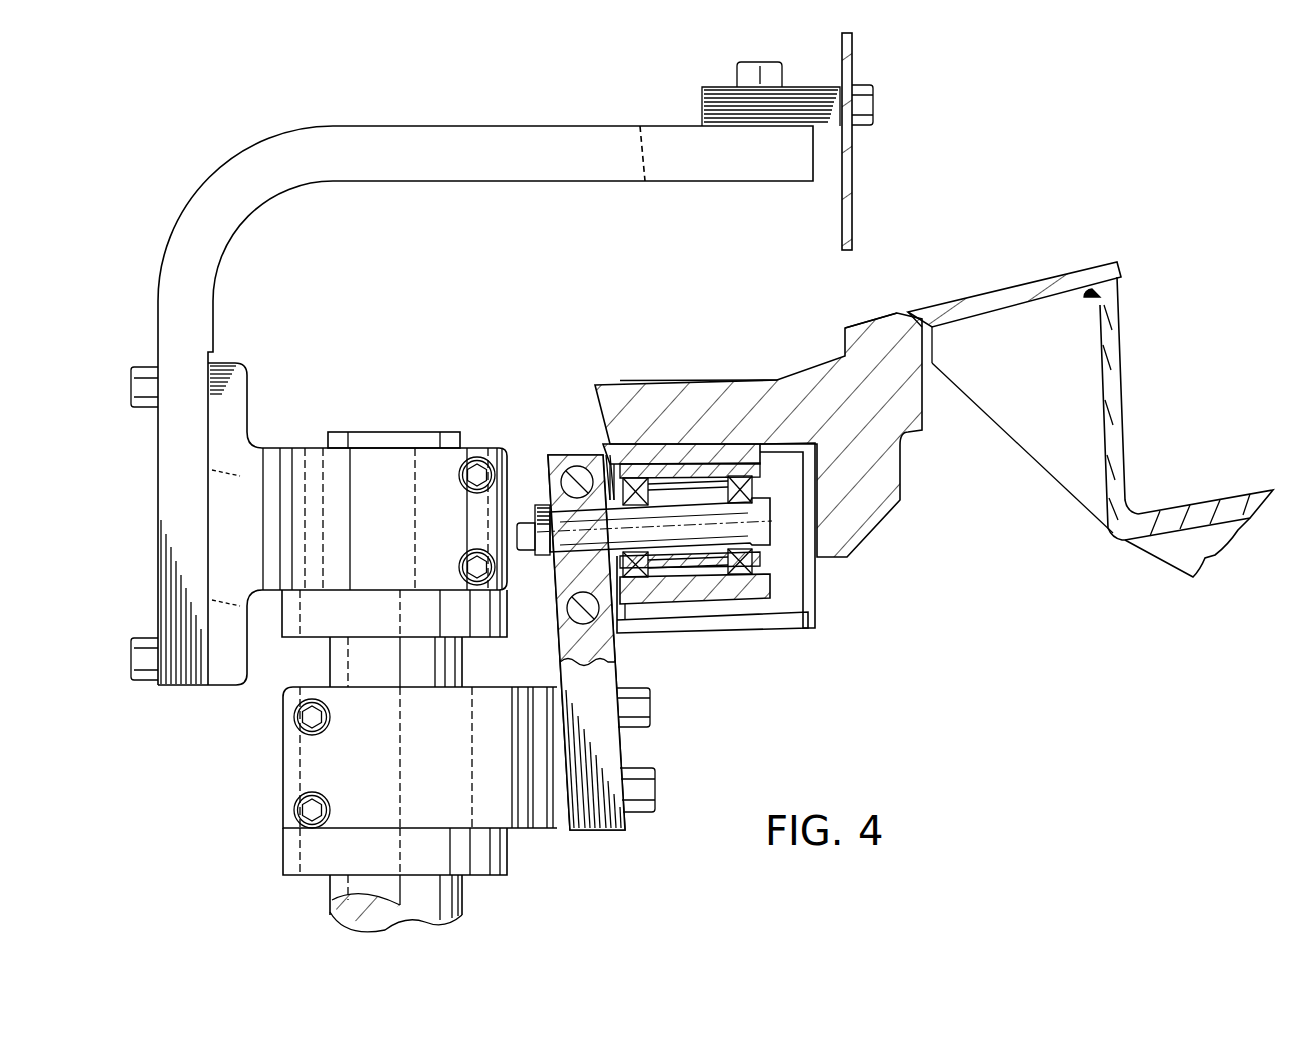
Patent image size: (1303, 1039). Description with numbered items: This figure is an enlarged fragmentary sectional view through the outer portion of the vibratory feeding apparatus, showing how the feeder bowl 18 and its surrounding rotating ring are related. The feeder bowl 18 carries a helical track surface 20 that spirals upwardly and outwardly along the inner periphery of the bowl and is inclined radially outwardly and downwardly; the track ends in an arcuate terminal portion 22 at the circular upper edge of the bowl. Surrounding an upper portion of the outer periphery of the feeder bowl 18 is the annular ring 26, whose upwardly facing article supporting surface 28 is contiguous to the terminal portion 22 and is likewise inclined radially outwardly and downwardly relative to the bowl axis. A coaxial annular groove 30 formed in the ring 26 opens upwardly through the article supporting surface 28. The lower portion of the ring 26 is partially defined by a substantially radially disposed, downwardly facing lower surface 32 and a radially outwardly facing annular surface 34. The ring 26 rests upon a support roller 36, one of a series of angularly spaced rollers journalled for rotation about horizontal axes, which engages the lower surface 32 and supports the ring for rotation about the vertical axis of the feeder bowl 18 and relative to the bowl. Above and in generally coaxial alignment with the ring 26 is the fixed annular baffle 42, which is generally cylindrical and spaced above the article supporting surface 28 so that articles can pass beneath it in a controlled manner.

The feeder bowl 18 is at (1065, 532).
The helical track surface 20 is at (1212, 500).
The arcuate terminal portion 22 is at (1012, 284).
The annular ring 26 is at (596, 398).
The article supporting surface 28 is at (862, 322).
The annular groove 30 is at (754, 380).
The lower surface 32 is at (610, 452).
The annular surface 34 is at (803, 536).
The support roller 36 is at (726, 600).
The annular baffle 42 is at (852, 210).